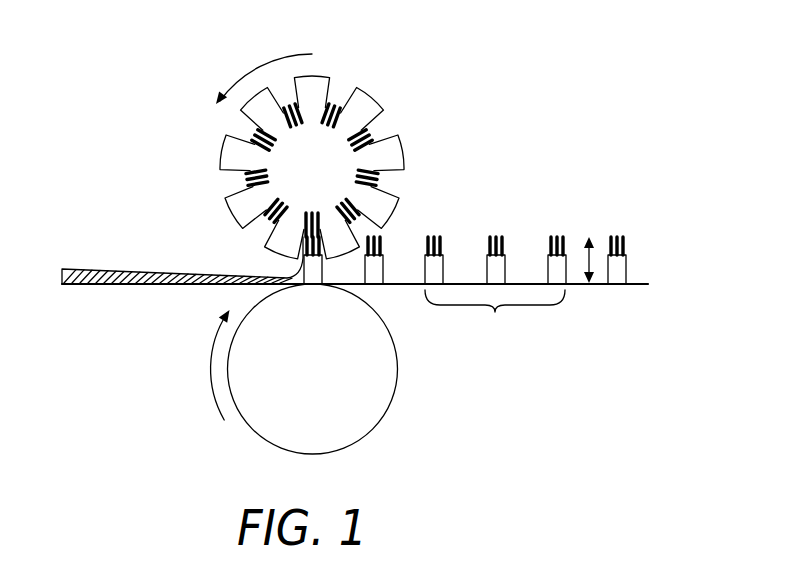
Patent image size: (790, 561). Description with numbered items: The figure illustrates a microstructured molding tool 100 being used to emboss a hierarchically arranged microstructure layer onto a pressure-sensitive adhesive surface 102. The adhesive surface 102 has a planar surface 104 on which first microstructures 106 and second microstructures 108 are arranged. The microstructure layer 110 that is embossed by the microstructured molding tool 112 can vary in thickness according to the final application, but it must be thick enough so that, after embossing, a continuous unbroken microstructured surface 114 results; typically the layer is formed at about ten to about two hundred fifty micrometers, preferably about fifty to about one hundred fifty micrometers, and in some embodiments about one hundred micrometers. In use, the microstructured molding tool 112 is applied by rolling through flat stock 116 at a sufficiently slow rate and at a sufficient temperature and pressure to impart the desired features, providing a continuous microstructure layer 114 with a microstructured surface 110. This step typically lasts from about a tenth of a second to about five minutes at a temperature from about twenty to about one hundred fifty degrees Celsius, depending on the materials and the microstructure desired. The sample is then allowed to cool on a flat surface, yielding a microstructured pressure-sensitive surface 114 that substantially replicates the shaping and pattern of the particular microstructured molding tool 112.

The microstructured molding tool 100 is at (526, 72).
The pressure-sensitive adhesive surface 102 is at (575, 243).
The planar surface 104 is at (641, 283).
The first microstructures 106 is at (627, 247).
The second microstructures 108 is at (557, 236).
The microstructure layer 110 is at (592, 262).
The microstructured molding tool 112 is at (367, 96).
The microstructured surface 114 is at (495, 312).
The flat stock 116 is at (117, 268).